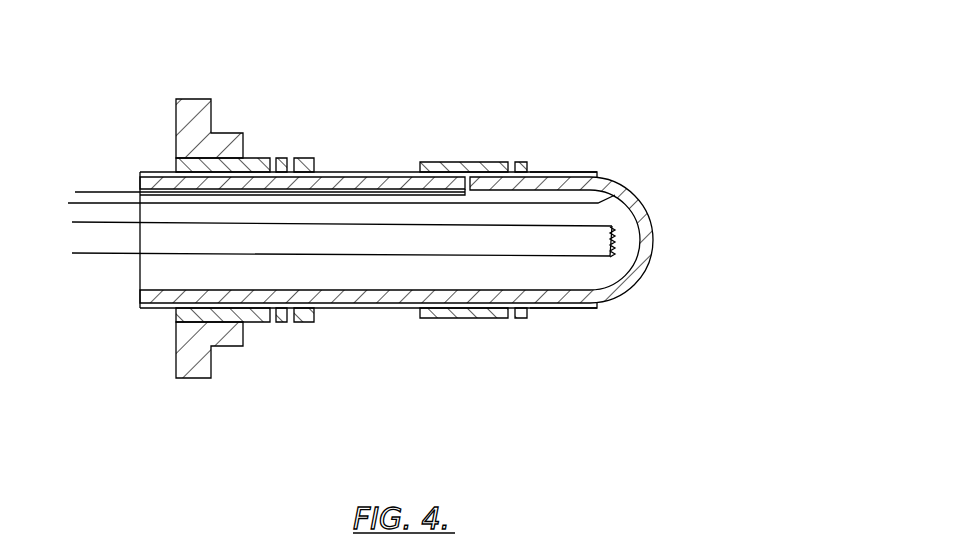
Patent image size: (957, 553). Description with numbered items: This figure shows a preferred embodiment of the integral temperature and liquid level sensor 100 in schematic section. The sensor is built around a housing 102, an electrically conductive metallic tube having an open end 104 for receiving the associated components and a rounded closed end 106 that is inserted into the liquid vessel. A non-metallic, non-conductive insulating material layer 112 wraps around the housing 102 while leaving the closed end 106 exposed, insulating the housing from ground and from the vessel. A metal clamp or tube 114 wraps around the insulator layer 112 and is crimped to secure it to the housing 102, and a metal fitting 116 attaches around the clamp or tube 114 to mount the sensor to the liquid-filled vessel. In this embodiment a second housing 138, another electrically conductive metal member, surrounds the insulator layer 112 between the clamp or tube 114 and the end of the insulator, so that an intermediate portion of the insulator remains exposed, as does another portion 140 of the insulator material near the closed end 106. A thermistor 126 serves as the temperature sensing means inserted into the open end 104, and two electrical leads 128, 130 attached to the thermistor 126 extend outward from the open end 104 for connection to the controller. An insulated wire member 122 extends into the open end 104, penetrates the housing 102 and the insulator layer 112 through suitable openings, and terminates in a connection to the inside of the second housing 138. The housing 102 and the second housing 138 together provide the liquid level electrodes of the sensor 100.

The integral temperature and liquid level sensor 100 is at (430, 330).
The housing 102 is at (656, 262).
The open end 104 is at (145, 288).
The closed end 106 is at (640, 306).
The insulating material layer 112 is at (601, 167).
The metal clamp or tube 114 is at (320, 156).
The metal fitting 116 is at (245, 130).
The insulated wire member 122 is at (78, 192).
The thermistor 126 is at (617, 229).
The electrical lead 128 is at (73, 222).
The electrical lead 130 is at (74, 253).
The second housing 138 is at (532, 157).
The exposed portion of insulator material 140 is at (573, 171).